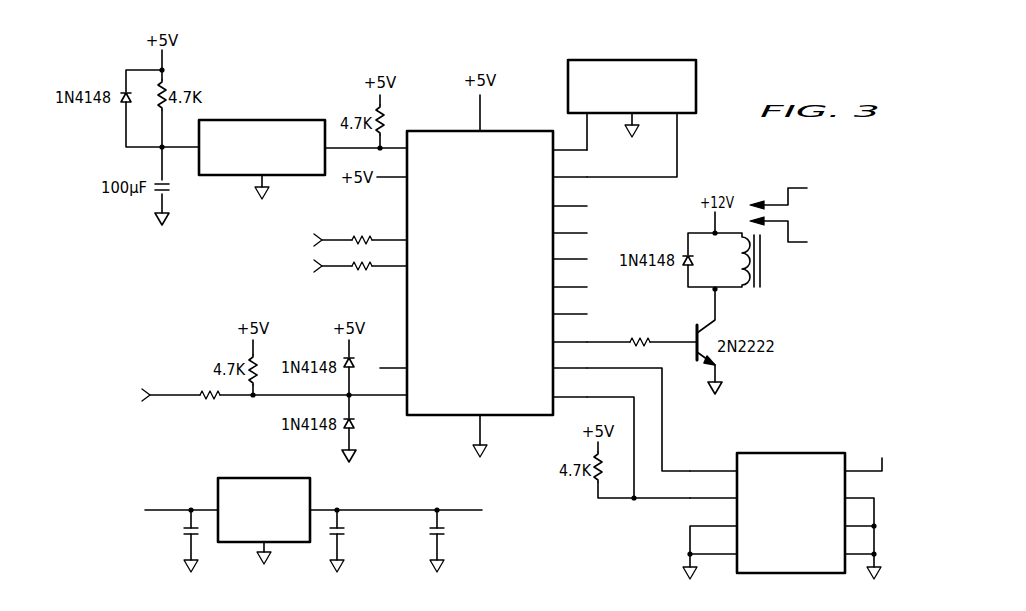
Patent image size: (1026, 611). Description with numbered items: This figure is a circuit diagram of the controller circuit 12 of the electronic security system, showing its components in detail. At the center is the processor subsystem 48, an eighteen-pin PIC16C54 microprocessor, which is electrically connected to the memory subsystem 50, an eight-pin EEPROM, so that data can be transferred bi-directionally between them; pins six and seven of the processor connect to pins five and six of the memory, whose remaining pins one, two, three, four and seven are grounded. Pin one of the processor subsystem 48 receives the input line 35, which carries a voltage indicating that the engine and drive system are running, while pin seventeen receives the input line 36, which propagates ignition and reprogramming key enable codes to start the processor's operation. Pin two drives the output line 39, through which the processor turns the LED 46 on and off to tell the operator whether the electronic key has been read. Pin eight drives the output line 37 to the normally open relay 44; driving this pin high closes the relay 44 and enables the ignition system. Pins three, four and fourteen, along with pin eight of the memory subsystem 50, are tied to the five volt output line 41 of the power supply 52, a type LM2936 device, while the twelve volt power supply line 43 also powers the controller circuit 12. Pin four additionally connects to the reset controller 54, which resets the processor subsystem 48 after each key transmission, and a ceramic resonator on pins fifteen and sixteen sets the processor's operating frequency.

The LED 46 is at (294, 6).
The controller circuit 12 is at (610, 44).
The reset controller 54 is at (262, 120).
The processor subsystem 48 is at (470, 306).
The memory subsystem 50 is at (781, 537).
The power supply 52 is at (264, 477).
The output line 39 is at (344, 238).
The input line 35 is at (342, 272).
The input line 36 is at (172, 392).
The output line 37 is at (598, 340).
The normally open relay 44 is at (776, 202).
The +12 volt power supply line 43 is at (170, 506).
The +5 volt output line 41 is at (449, 508).